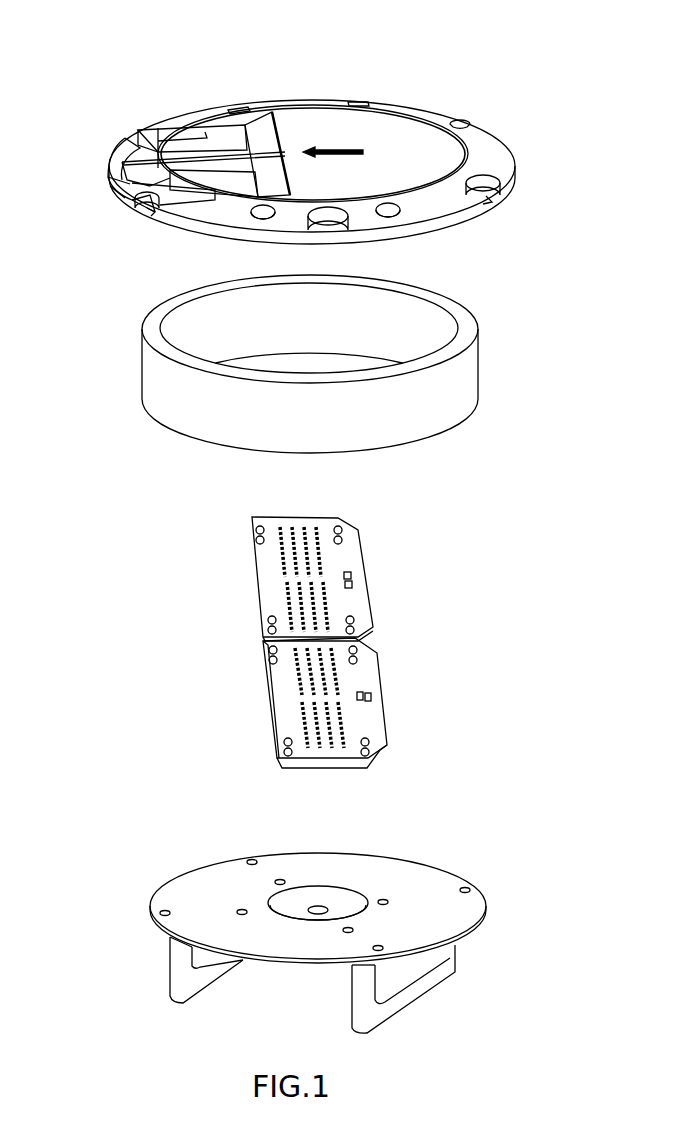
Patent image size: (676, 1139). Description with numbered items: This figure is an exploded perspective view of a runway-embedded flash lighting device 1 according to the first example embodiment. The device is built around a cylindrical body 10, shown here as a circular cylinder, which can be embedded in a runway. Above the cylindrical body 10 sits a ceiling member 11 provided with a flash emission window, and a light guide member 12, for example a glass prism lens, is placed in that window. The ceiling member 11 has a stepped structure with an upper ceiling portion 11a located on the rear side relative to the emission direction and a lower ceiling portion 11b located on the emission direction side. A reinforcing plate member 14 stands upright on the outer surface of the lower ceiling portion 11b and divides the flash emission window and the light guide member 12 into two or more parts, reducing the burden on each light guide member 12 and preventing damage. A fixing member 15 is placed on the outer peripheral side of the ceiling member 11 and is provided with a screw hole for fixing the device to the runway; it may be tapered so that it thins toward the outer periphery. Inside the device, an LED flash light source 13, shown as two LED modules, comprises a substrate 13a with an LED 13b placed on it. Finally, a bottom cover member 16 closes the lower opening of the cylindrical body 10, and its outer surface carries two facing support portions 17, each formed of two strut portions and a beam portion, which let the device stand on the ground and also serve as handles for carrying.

The runway-embedded flash lighting device 1 is at (391, 50).
The cylindrical body 10 is at (466, 377).
The ceiling member 11 is at (495, 153).
The upper ceiling portion 11a is at (420, 113).
The lower ceiling portion 11b is at (218, 143).
The light guide member 12 is at (260, 135).
The LED flash light source 13 is at (385, 672).
The substrate 13a is at (323, 770).
The LED 13b is at (317, 525).
The reinforcing plate member 14 is at (112, 185).
The fixing member 15 is at (493, 182).
The bottom cover member 16 is at (470, 907).
The support portion 17 is at (443, 965).